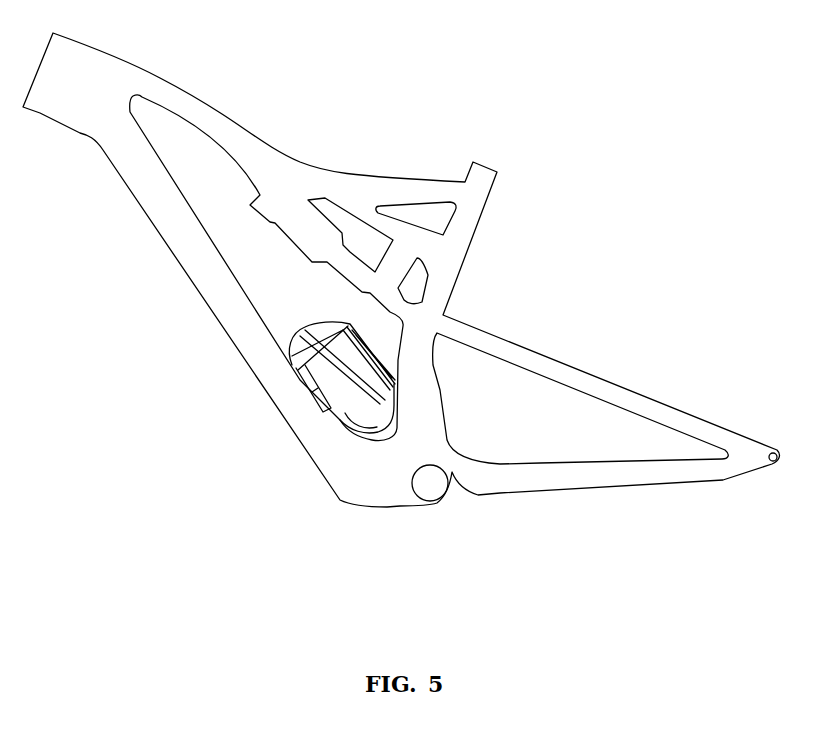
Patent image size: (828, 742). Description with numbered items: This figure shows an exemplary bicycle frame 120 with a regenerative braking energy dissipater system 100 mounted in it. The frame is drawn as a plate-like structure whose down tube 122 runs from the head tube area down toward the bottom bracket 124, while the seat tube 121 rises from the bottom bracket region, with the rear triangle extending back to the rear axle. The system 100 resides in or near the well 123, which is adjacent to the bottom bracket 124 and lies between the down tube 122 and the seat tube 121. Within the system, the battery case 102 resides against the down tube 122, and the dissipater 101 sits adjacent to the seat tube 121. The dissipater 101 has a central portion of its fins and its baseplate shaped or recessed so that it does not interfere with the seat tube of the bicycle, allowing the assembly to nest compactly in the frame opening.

The regenerative braking energy dissipater system 100 is at (305, 322).
The dissipater 101 is at (366, 302).
The battery case 102 is at (362, 425).
The bicycle frame 120 is at (224, 114).
The seat tube 121 is at (437, 387).
The down tube 122 is at (245, 363).
The well 123 is at (382, 437).
The bottom bracket 124 is at (437, 493).